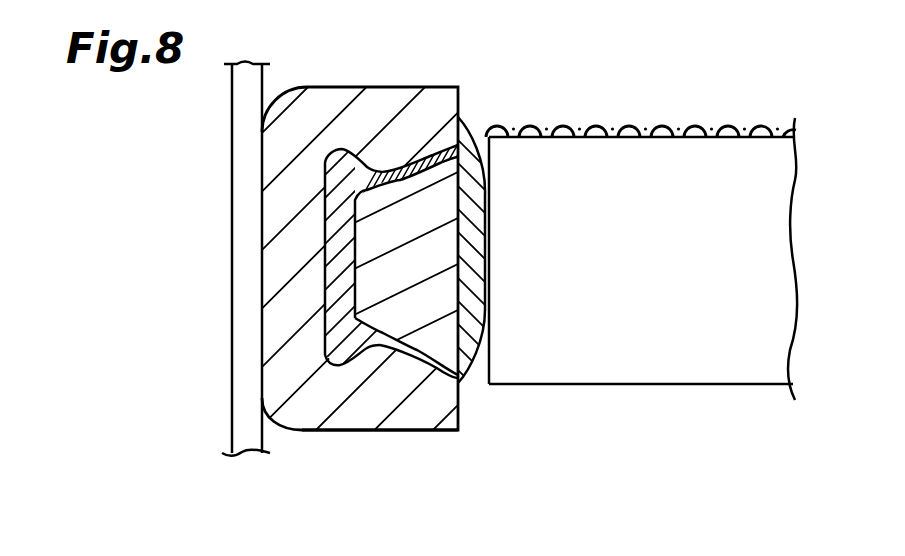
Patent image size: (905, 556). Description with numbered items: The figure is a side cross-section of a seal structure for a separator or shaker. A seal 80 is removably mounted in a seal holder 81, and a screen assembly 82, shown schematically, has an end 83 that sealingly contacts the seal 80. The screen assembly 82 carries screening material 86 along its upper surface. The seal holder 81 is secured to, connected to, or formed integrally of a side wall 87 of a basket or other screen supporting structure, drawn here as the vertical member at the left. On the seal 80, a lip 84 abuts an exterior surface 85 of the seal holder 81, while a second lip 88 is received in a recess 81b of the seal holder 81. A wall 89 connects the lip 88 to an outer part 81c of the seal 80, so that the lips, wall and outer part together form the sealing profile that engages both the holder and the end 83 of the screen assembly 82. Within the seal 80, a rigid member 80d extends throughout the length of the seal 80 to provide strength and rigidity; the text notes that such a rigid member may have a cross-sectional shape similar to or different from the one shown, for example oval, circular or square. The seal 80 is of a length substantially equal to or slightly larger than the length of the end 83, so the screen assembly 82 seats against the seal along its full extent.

The seal 80 is at (474, 158).
The rigid member 80d is at (400, 275).
The seal holder 81 is at (412, 113).
The recess 81b is at (331, 153).
The outer part 81c is at (472, 160).
The screen assembly 82 is at (637, 178).
The end 83 is at (489, 340).
The lip 84 is at (460, 387).
The exterior surface 85 is at (462, 421).
The screening material 86 is at (767, 123).
The side wall 87 is at (243, 272).
The lip 88 is at (340, 363).
The wall 89 is at (410, 345).